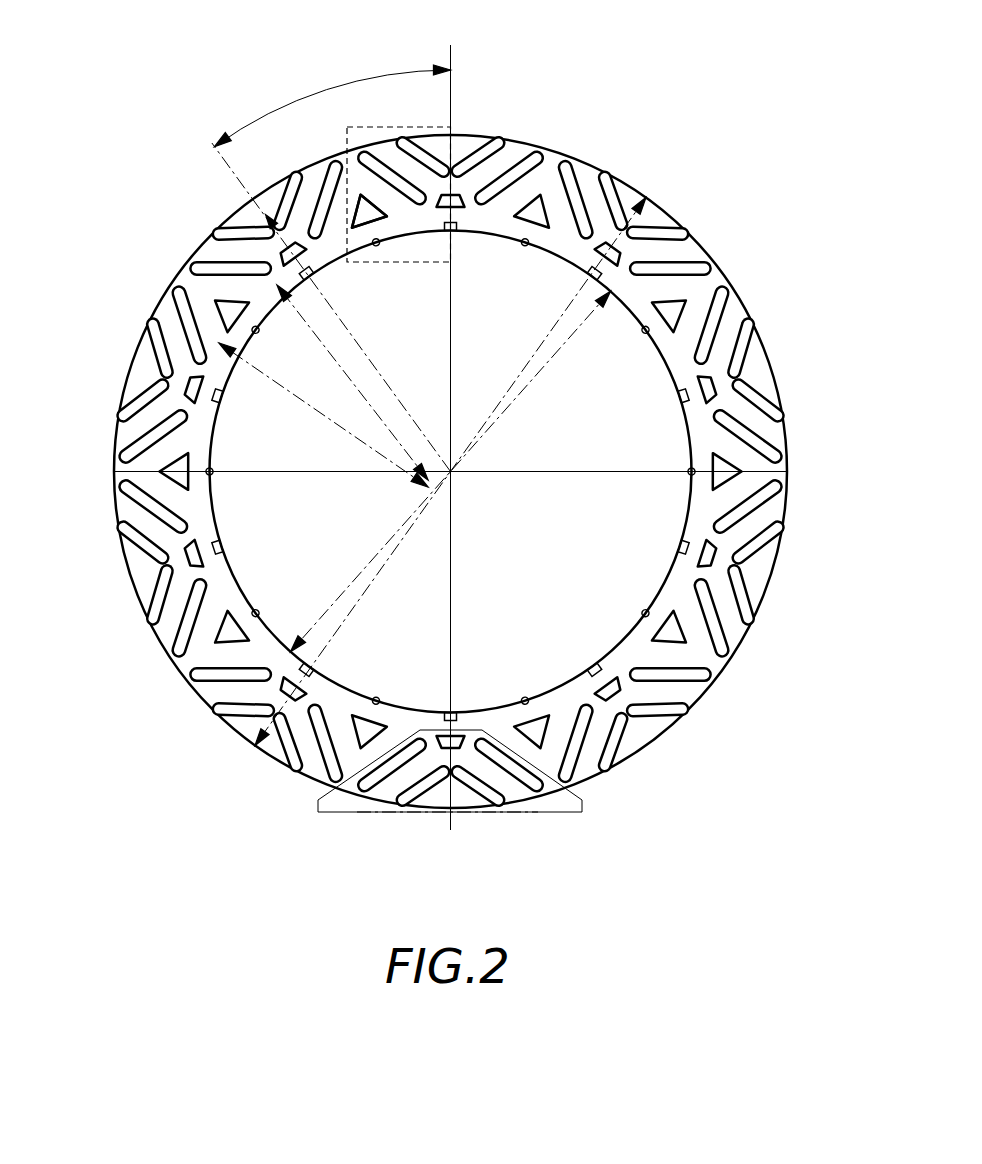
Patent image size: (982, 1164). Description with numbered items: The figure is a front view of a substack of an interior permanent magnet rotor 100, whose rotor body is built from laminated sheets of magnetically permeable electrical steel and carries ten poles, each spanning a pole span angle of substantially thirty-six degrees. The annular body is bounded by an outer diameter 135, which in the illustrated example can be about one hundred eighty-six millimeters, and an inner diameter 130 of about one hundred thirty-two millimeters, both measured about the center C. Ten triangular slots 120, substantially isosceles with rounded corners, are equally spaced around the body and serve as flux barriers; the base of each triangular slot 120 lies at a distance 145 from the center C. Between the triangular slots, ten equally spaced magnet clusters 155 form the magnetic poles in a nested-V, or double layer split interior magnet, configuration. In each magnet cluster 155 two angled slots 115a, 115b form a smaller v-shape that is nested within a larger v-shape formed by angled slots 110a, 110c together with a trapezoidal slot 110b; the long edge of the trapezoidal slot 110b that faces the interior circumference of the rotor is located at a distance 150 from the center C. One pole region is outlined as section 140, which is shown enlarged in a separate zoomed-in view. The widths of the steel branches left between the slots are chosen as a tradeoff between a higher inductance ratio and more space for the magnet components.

The IPM rotor 100 is at (437, 409).
The angled slot 110a is at (361, 145).
The trapezoidal slot 110b is at (438, 208).
The angled slot 110c is at (557, 150).
The angled slot 115a is at (424, 138).
The angled slot 115b is at (484, 135).
The triangular slot 120 is at (365, 226).
The inner diameter 130 is at (329, 607).
The outer diameter 135 is at (338, 627).
The section 140 is at (345, 149).
The distance 145 is at (262, 375).
The distance 150 is at (310, 322).
The magnet cluster 155 is at (538, 812).
The center C is at (453, 473).